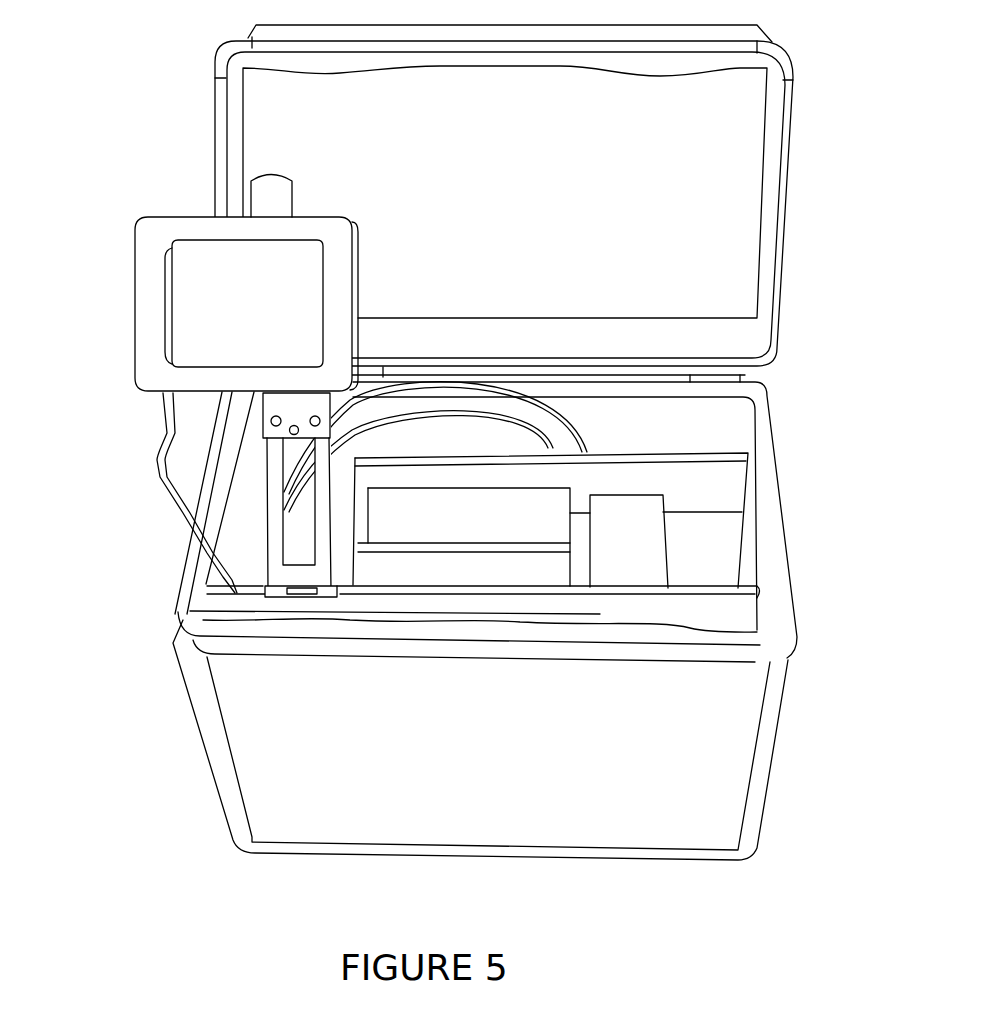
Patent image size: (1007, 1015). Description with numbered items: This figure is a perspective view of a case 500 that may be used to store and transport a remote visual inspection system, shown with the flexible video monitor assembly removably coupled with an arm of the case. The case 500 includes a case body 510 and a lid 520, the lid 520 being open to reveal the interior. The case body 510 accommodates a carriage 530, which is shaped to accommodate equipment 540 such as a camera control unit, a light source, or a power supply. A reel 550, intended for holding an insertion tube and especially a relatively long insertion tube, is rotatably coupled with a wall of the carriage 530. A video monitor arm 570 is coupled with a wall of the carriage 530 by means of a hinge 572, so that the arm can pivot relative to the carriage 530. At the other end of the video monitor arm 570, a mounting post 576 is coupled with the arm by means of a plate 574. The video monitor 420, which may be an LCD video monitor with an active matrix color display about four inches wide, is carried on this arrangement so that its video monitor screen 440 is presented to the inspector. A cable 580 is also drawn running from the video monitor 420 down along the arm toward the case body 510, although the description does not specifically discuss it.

The case 500 is at (800, 742).
The case body 510 is at (800, 495).
The lid 520 is at (798, 258).
The carriage 530 is at (698, 473).
The equipment 540 is at (515, 505).
The reel 550 is at (530, 424).
The video monitor arm 570 is at (270, 530).
The hinge 572 is at (295, 598).
The plate 574 is at (270, 407).
The mounting post 576 is at (292, 183).
The cable 580 is at (170, 491).
The video monitor 420 is at (246, 278).
The video monitor screen 440 is at (244, 303).